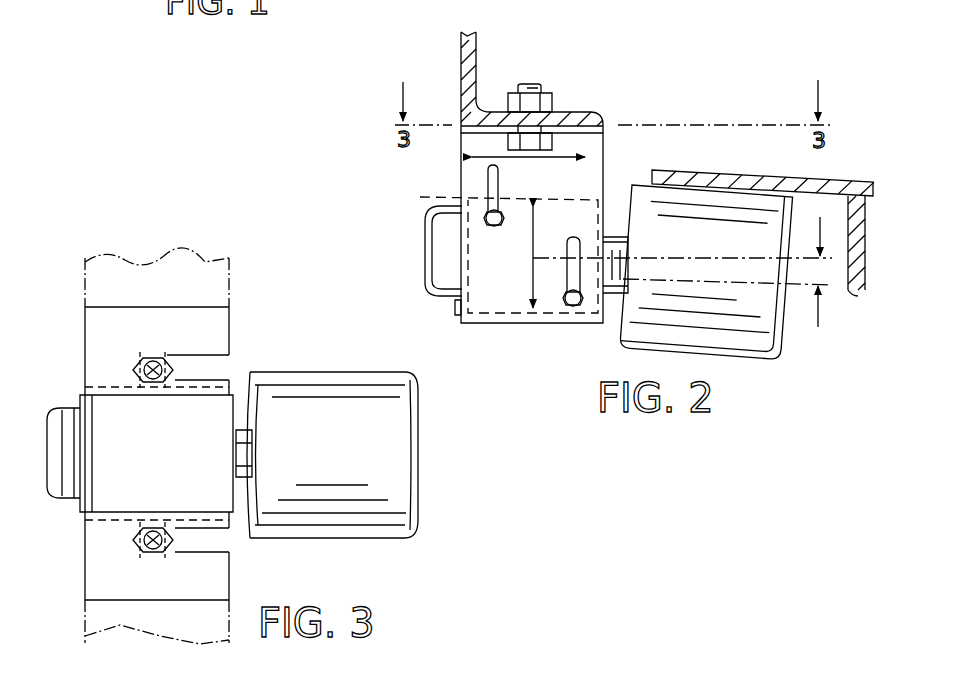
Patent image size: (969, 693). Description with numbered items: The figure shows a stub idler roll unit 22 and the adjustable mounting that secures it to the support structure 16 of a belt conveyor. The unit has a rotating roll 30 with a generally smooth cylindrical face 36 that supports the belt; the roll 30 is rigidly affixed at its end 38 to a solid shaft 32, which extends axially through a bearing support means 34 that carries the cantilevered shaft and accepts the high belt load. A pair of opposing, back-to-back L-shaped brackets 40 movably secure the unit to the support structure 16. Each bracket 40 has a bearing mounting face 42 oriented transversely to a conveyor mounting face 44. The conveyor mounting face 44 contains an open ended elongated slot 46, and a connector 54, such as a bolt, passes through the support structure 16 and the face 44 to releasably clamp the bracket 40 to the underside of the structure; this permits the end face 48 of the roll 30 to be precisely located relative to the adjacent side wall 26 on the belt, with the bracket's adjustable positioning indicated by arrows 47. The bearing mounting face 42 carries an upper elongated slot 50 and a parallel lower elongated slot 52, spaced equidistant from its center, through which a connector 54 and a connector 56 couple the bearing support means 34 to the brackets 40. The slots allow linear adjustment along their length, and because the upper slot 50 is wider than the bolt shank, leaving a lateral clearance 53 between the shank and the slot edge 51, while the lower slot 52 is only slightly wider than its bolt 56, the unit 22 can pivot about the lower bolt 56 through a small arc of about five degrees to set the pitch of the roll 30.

In FIG. 3, the support structure 16 is at (177, 262).
In FIG. 3, the stub idler roll unit 22 is at (252, 352).
In FIG. 2, the side wall 26 is at (839, 273).
In FIG. 3, the rotating roll 30 is at (400, 440).
In FIG. 3, the solid shaft 32 is at (250, 452).
In FIG. 3, the bearing support means 34 is at (155, 465).
In FIG. 3, the cylindrical face 36 is at (330, 372).
In FIG. 3, the end of the roll 38 is at (254, 490).
In FIG. 3, the L-shaped bracket 40 is at (100, 333).
In FIG. 3, the bearing mounting face 42 is at (128, 395).
In FIG. 3, the conveyor mounting face 44 is at (225, 318).
In FIG. 3, the open ended elongated slot 46 is at (205, 357).
In FIG. 2, the arrows 47 is at (603, 143).
In FIG. 2, the end face 48 is at (785, 338).
In FIG. 3, the end face 48 is at (418, 495).
In FIG. 2, the upper elongated slot 50 is at (488, 176).
In FIG. 2, the edge of the slot 51 is at (500, 188).
In FIG. 2, the lower elongated slot 52 is at (568, 290).
In FIG. 2, the lateral clearance 53 is at (491, 250).
In FIG. 2, the connector 54 is at (530, 84).
In FIG. 3, the connector 54 is at (170, 383).
In FIG. 2, the connector 56 is at (577, 306).